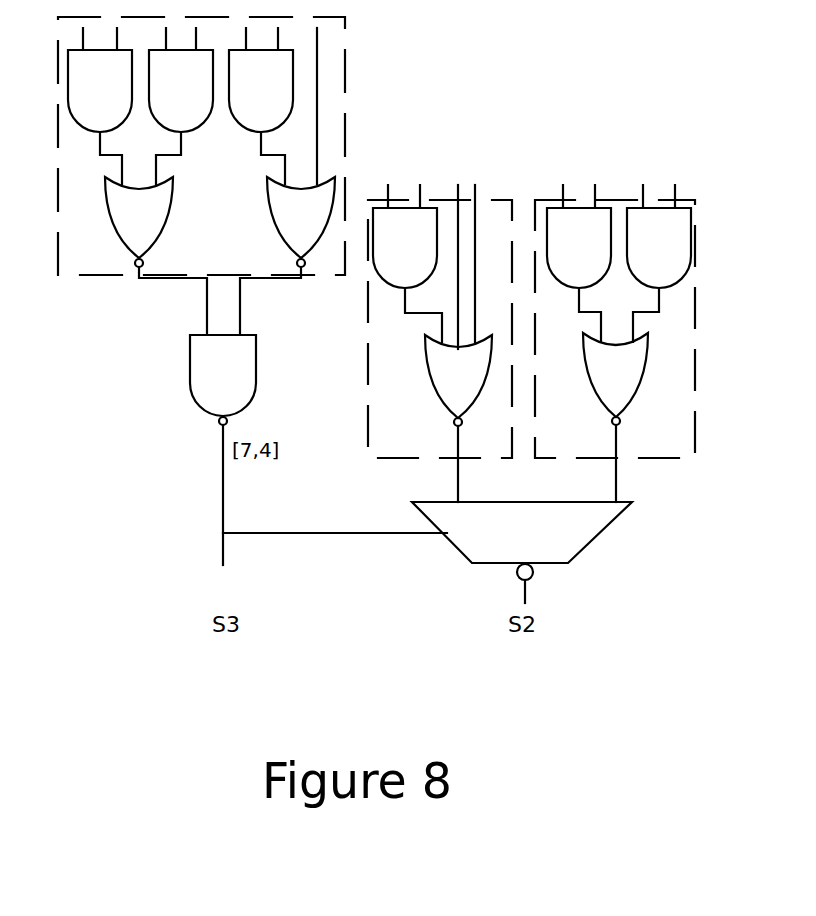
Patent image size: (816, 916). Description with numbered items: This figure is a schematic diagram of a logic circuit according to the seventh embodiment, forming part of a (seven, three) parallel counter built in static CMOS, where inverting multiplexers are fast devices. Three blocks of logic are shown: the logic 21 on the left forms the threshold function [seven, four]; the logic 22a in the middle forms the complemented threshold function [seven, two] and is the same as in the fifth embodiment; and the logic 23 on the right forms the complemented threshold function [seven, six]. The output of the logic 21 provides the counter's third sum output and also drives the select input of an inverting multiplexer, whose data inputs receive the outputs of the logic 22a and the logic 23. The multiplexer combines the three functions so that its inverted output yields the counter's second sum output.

The logic 21 is at (58, 98).
The logic 22a is at (370, 330).
The logic 23 is at (693, 258).